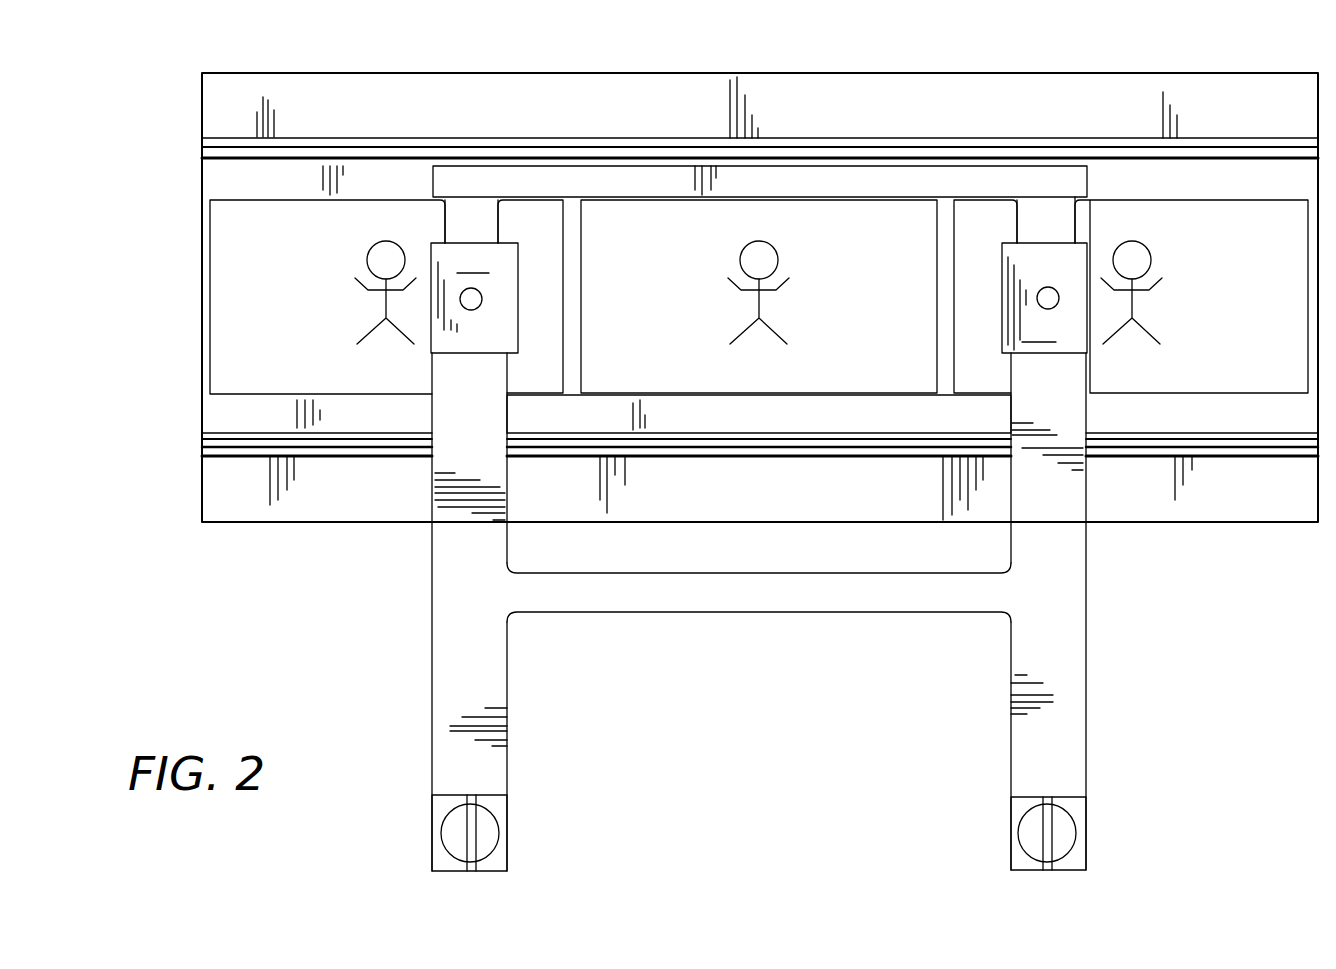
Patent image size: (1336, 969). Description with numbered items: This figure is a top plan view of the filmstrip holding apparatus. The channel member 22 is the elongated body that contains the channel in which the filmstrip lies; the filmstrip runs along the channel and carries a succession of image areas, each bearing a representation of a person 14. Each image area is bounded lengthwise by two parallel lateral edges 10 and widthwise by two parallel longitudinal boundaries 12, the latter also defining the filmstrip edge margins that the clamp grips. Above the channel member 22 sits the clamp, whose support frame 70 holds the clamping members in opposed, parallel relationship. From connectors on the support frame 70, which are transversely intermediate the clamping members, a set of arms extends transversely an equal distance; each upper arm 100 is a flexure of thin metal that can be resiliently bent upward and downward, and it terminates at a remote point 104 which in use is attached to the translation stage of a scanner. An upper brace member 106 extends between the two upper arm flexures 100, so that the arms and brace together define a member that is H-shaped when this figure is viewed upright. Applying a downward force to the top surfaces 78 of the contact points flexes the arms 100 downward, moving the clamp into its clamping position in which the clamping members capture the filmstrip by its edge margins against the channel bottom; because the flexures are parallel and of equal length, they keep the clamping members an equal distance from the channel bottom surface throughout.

The channel member 22 is at (357, 93).
The image area longitudinal boundaries 12 is at (668, 206).
The lateral edges 10 is at (581, 333).
The person 14 is at (778, 253).
The top surfaces 78 is at (759, 298).
The support frame 70 is at (1063, 228).
The upper arm 100 is at (445, 660).
The remote points 104 is at (487, 833).
The upper brace member 106 is at (790, 595).